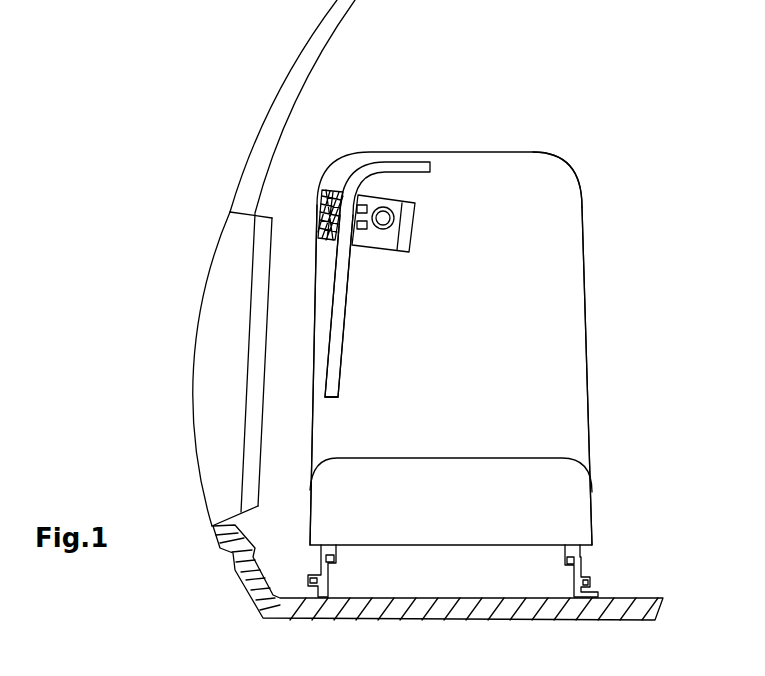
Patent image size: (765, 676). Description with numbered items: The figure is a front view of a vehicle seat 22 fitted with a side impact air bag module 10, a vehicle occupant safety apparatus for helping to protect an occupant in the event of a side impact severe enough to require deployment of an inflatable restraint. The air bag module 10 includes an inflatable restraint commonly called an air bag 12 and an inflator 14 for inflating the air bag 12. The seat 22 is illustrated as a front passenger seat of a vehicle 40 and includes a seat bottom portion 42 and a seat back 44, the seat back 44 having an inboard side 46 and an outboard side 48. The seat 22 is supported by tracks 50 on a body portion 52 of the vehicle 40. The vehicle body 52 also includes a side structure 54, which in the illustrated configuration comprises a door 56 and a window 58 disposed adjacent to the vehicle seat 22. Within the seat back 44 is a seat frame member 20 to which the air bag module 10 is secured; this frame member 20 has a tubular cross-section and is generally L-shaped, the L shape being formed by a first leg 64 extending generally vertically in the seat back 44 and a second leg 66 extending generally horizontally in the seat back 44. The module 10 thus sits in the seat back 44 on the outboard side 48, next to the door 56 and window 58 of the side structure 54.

The air bag module 10 is at (420, 240).
The air bag 12 is at (320, 208).
The inflator 14 is at (388, 209).
The seat frame member 20 is at (340, 323).
The vehicle seat 22 is at (592, 413).
The vehicle 40 is at (143, 415).
The seat bottom portion 42 is at (552, 505).
The seat back 44 is at (543, 312).
The inboard side 46 is at (585, 235).
The outboard side 48 is at (310, 373).
The tracks 50 is at (325, 588).
The body portion 52 is at (255, 604).
The side structure 54 is at (213, 190).
The door 56 is at (195, 320).
The window 58 is at (318, 27).
The first leg 64 is at (340, 287).
The second leg 66 is at (400, 165).